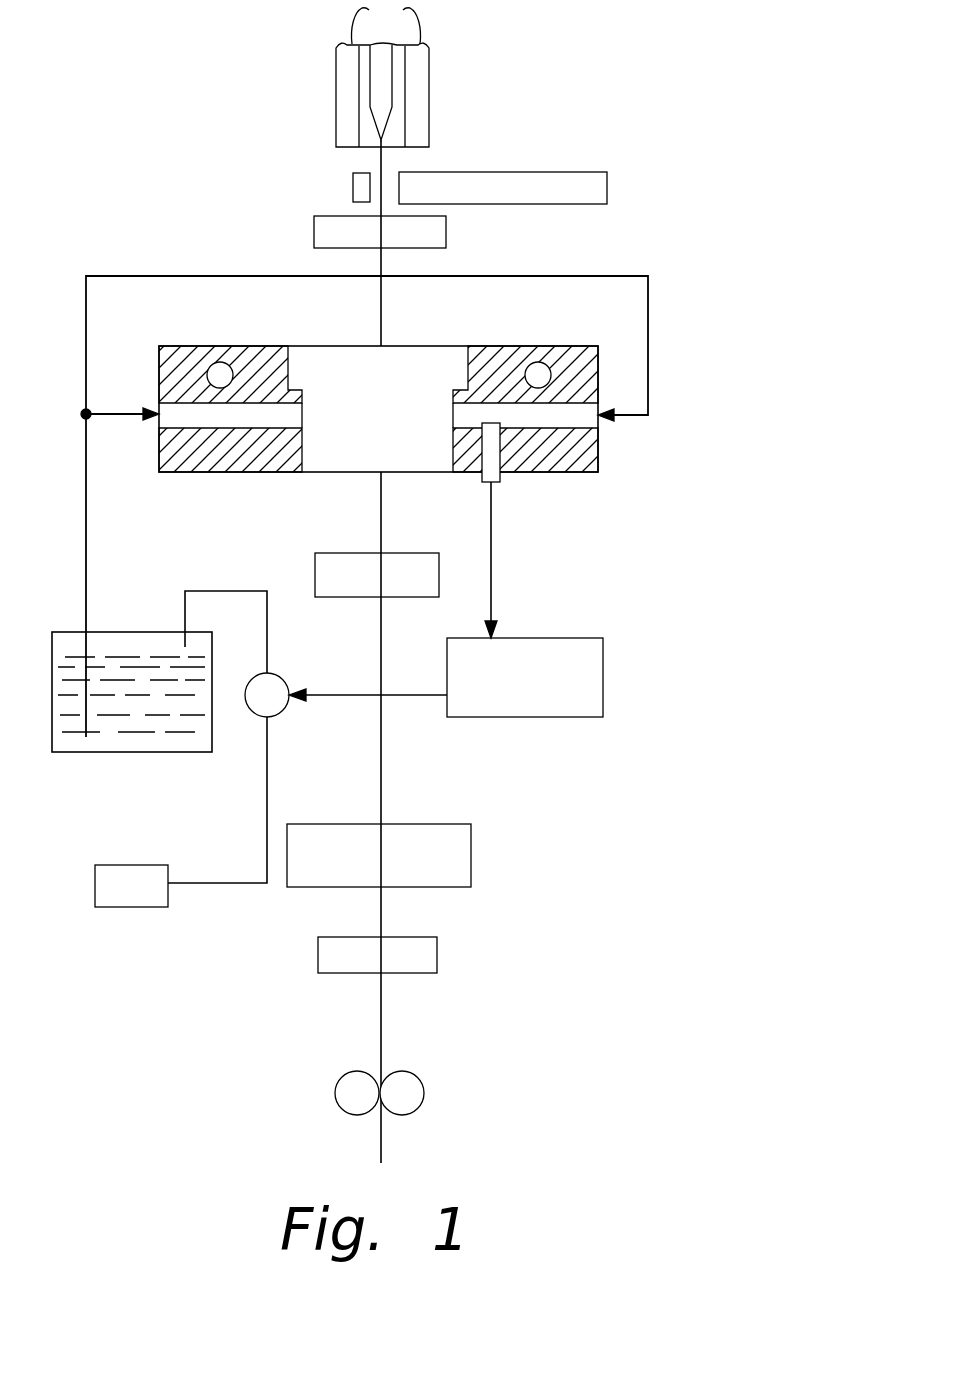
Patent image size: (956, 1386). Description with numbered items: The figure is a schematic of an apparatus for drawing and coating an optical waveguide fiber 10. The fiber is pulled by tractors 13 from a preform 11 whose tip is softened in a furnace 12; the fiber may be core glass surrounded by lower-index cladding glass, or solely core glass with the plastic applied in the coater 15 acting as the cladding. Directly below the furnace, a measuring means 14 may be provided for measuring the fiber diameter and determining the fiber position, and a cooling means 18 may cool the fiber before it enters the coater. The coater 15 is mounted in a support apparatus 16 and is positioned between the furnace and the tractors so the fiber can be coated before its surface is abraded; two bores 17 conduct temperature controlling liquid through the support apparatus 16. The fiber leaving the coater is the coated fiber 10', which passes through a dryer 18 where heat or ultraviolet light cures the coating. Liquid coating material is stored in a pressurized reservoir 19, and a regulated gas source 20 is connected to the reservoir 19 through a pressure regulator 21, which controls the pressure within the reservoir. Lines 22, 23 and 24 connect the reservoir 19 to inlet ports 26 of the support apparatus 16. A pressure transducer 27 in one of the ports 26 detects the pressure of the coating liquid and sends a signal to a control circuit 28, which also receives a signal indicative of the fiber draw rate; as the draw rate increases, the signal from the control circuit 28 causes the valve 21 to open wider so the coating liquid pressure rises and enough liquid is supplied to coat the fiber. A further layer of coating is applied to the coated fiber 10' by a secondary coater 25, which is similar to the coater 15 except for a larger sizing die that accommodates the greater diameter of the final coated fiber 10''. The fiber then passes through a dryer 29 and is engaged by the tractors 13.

The optical waveguide fiber 10 is at (341, 651).
The coated fiber 10' is at (412, 511).
The final coated fiber 10'' is at (415, 1036).
The preform 11 is at (388, 78).
The furnace 12 is at (385, 22).
The tractors 13 is at (424, 1092).
The fiber diameter measuring means 14 is at (353, 188).
The coater 15 is at (365, 453).
The support apparatus 16 is at (588, 473).
The bores 17 is at (221, 362).
The cooling means / dryer 18 is at (446, 232).
The pressurized reservoir 19 is at (126, 631).
The regulated gas source 20 is at (133, 909).
The pressure regulator 21 is at (287, 680).
The line 22 is at (84, 553).
The line 23 is at (119, 411).
The line 24 is at (86, 354).
The secondary coater 25 is at (471, 850).
The inlet ports 26 is at (172, 421).
The pressure transducer 27 is at (500, 478).
The control circuit 28 is at (603, 688).
The dryer 29 is at (437, 955).